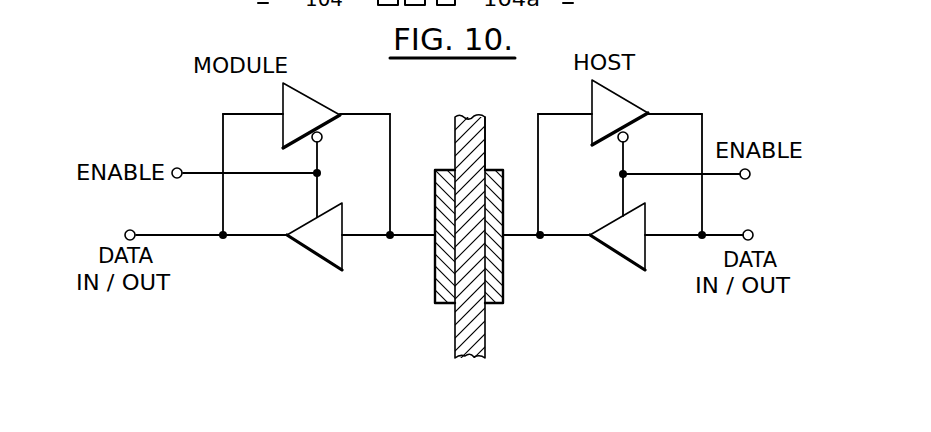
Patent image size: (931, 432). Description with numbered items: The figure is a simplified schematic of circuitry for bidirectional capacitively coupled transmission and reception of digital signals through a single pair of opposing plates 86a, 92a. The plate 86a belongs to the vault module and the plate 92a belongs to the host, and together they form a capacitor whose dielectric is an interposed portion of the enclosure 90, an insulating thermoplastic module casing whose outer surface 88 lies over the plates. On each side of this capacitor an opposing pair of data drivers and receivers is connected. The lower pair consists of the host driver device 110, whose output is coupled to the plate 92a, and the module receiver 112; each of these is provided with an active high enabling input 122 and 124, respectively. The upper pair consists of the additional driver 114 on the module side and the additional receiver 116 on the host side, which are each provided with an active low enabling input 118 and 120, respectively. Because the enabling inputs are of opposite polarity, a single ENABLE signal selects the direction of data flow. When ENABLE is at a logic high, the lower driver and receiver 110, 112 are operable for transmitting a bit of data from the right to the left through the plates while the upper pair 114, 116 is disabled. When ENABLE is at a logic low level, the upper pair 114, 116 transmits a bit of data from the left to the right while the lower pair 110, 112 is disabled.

The driver 114 is at (313, 93).
The active low enabling input 118 is at (323, 136).
The active high enabling input 124 is at (315, 213).
The receiver 112 is at (312, 256).
The enclosure 90 is at (467, 117).
The outer surface 88 is at (484, 130).
The plate 86a is at (437, 292).
The plate 92a is at (503, 290).
The receiver 116 is at (618, 93).
The active low enabling input 120 is at (629, 135).
The active high enabling input 122 is at (620, 213).
The driver device 110 is at (613, 257).